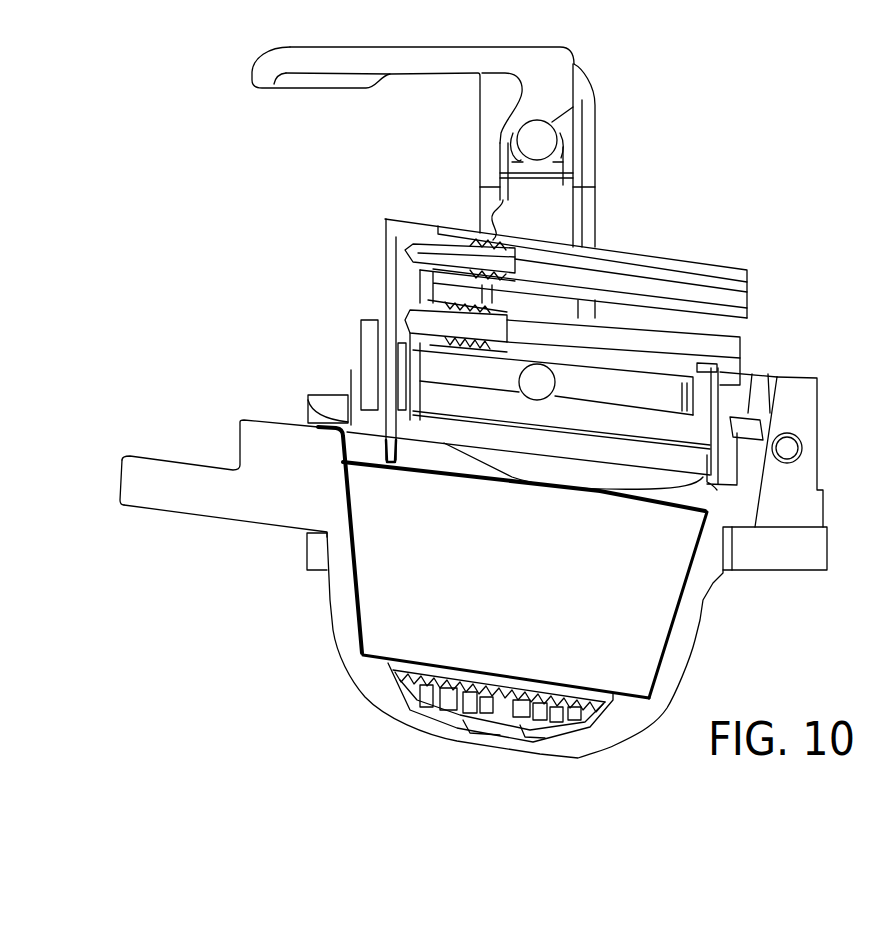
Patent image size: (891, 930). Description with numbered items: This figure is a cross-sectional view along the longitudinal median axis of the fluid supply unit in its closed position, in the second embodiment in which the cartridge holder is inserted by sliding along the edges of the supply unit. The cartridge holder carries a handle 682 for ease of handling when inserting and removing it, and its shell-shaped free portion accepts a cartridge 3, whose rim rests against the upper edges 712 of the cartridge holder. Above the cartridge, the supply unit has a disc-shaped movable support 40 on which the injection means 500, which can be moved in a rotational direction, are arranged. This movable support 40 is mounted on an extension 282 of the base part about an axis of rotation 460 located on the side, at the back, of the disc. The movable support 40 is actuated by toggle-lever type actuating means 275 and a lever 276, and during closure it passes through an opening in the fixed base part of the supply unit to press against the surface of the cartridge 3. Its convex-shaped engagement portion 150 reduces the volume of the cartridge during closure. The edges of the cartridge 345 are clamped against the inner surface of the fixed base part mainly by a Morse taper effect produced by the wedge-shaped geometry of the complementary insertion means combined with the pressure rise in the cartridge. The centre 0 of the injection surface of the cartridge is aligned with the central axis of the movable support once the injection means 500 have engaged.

The lever 276 is at (417, 64).
The toggle-lever type actuating means 275 is at (605, 155).
The movable support 40 is at (750, 360).
The injection means 500 is at (388, 363).
The extension 282 is at (810, 390).
The axis of rotation 460 is at (790, 448).
The edges of the cartridge 345 is at (727, 487).
The convex-shaped engagement portion 150 is at (607, 483).
The opening 0 is at (512, 480).
The handle 682 is at (165, 503).
The upper edges 712 is at (327, 436).
The cartridge 3 is at (352, 600).